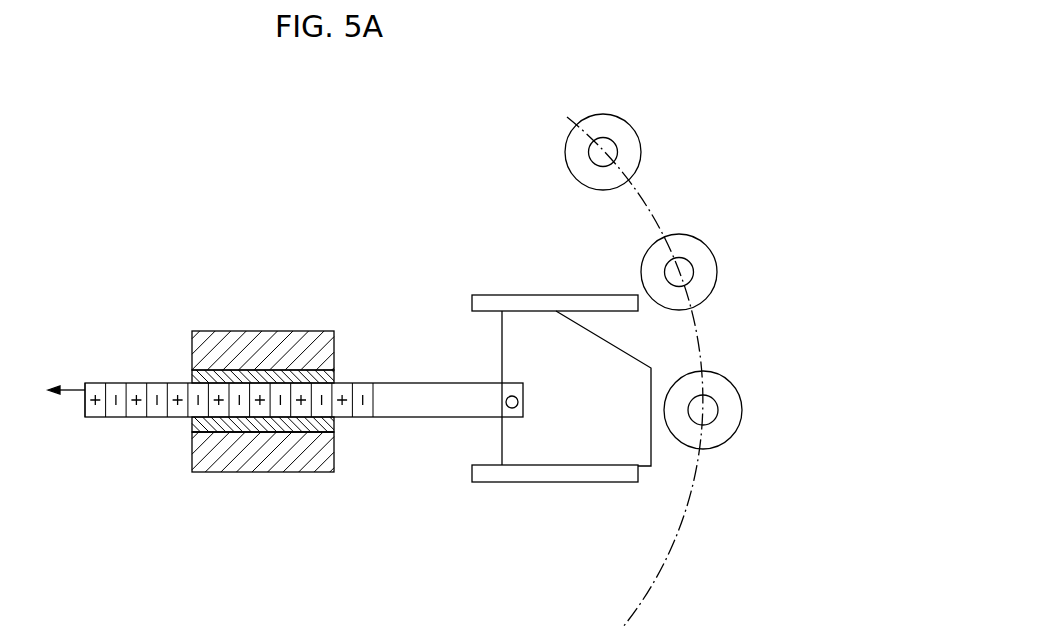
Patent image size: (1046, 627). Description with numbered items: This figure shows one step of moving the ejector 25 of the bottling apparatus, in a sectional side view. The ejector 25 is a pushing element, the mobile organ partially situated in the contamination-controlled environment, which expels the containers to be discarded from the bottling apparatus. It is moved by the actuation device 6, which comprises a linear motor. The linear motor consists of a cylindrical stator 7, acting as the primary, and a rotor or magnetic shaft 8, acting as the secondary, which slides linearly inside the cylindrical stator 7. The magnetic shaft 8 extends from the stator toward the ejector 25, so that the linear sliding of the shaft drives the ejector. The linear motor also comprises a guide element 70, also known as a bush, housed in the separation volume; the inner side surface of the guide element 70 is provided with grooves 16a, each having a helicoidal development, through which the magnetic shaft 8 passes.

The actuation device 6 is at (171, 280).
The cylindrical stator 7 is at (289, 343).
The magnetic shaft 8 is at (361, 383).
The groove 16a is at (229, 381).
The ejector 25 is at (645, 361).
The guide element 70 is at (336, 427).